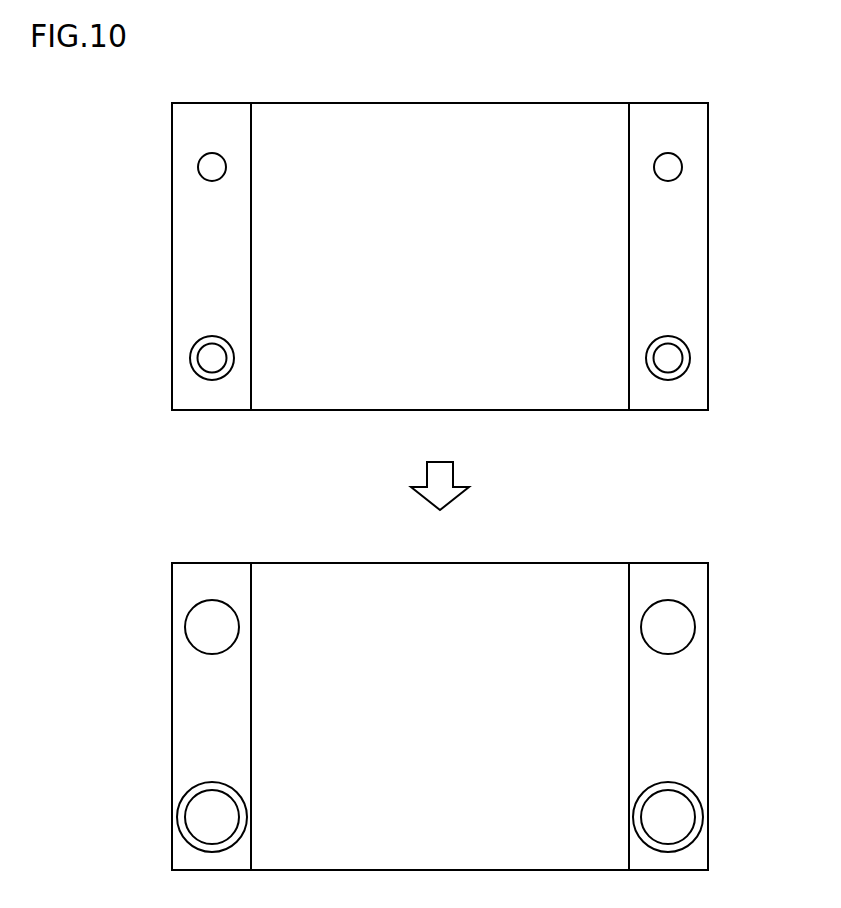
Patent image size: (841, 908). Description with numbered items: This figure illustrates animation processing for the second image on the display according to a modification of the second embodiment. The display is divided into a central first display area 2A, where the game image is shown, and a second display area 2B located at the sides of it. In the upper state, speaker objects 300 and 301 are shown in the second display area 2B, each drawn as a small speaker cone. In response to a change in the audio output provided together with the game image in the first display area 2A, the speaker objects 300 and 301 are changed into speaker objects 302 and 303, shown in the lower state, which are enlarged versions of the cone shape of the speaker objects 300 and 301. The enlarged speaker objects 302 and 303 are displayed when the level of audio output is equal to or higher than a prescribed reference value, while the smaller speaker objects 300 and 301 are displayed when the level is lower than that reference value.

The first display area 2A is at (432, 103).
The second display area 2B is at (441, 470).
The speaker object 300 is at (198, 272).
The speaker object 301 is at (667, 257).
The speaker object 302 is at (207, 727).
The speaker object 303 is at (678, 720).